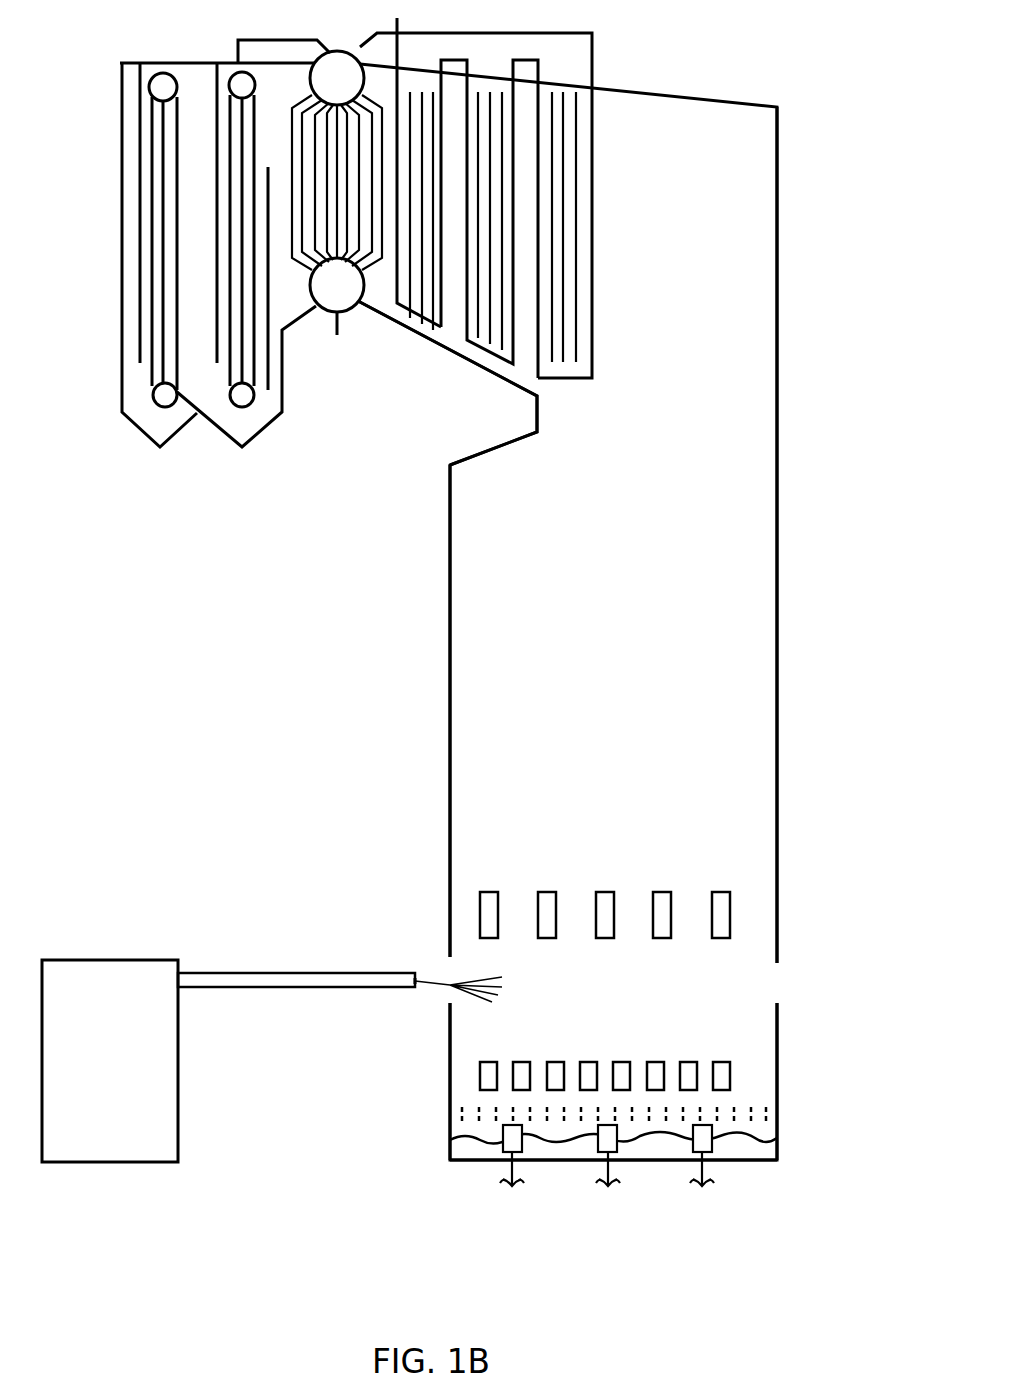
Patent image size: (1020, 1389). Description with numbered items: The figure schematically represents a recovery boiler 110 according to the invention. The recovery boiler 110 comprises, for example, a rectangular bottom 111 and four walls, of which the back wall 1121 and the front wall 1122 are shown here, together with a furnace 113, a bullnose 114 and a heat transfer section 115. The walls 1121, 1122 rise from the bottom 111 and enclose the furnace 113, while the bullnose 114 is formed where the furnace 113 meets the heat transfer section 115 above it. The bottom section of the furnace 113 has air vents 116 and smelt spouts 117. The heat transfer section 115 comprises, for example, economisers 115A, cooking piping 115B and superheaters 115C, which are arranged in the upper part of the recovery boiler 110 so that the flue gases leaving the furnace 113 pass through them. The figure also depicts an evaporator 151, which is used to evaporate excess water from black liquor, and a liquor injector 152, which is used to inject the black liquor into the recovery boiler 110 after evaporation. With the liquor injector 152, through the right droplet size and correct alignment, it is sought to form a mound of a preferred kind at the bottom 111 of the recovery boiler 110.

The recovery boiler 110 is at (471, 649).
The rectangular bottom 111 is at (748, 1161).
The back wall 1121 is at (448, 650).
The front wall 1122 is at (778, 708).
The furnace 113 is at (619, 701).
The bullnose 114 is at (538, 413).
The heat transfer section 115 is at (243, 310).
The economisers 115A is at (182, 50).
The cooking piping 115B is at (337, 51).
The superheaters 115C is at (437, 363).
The air vents 116 is at (650, 960).
The smelt spouts 117 is at (690, 1200).
The evaporator 151 is at (90, 960).
The liquor injector 152 is at (323, 988).